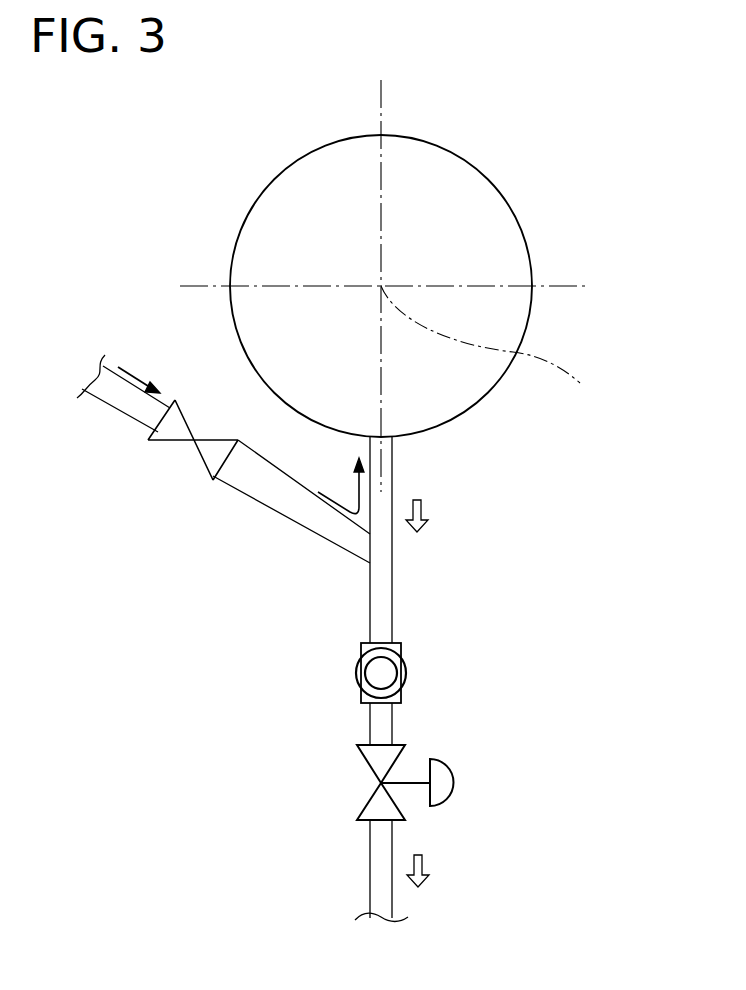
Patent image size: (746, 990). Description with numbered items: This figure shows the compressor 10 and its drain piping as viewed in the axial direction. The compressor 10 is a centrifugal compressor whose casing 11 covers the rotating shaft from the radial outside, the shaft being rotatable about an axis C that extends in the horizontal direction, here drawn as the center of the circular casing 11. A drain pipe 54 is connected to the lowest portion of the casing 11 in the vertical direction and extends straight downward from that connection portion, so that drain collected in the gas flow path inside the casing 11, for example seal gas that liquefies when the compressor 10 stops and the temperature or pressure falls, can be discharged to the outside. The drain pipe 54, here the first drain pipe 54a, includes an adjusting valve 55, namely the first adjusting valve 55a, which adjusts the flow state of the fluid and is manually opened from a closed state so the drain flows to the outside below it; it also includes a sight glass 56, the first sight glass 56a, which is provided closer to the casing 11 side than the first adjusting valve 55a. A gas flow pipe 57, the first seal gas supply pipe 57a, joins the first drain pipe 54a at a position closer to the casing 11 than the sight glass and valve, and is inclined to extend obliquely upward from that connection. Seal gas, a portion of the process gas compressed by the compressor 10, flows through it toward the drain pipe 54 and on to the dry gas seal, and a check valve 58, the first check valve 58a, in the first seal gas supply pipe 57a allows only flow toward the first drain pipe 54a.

The compressor 10 is at (385, 235).
The casing 11 is at (437, 141).
The axis C is at (491, 344).
The drain pipe 54 is at (473, 679).
The first drain pipe 54a is at (393, 470).
The adjusting valve 55 is at (504, 782).
The first adjusting valve 55a is at (455, 783).
The sight glass 56 is at (489, 673).
The first sight glass 56a is at (405, 675).
The gas flow pipe 57 is at (201, 459).
The first seal gas supply pipe 57a is at (118, 408).
The check valve 58 is at (194, 486).
The first check valve 58a is at (170, 440).